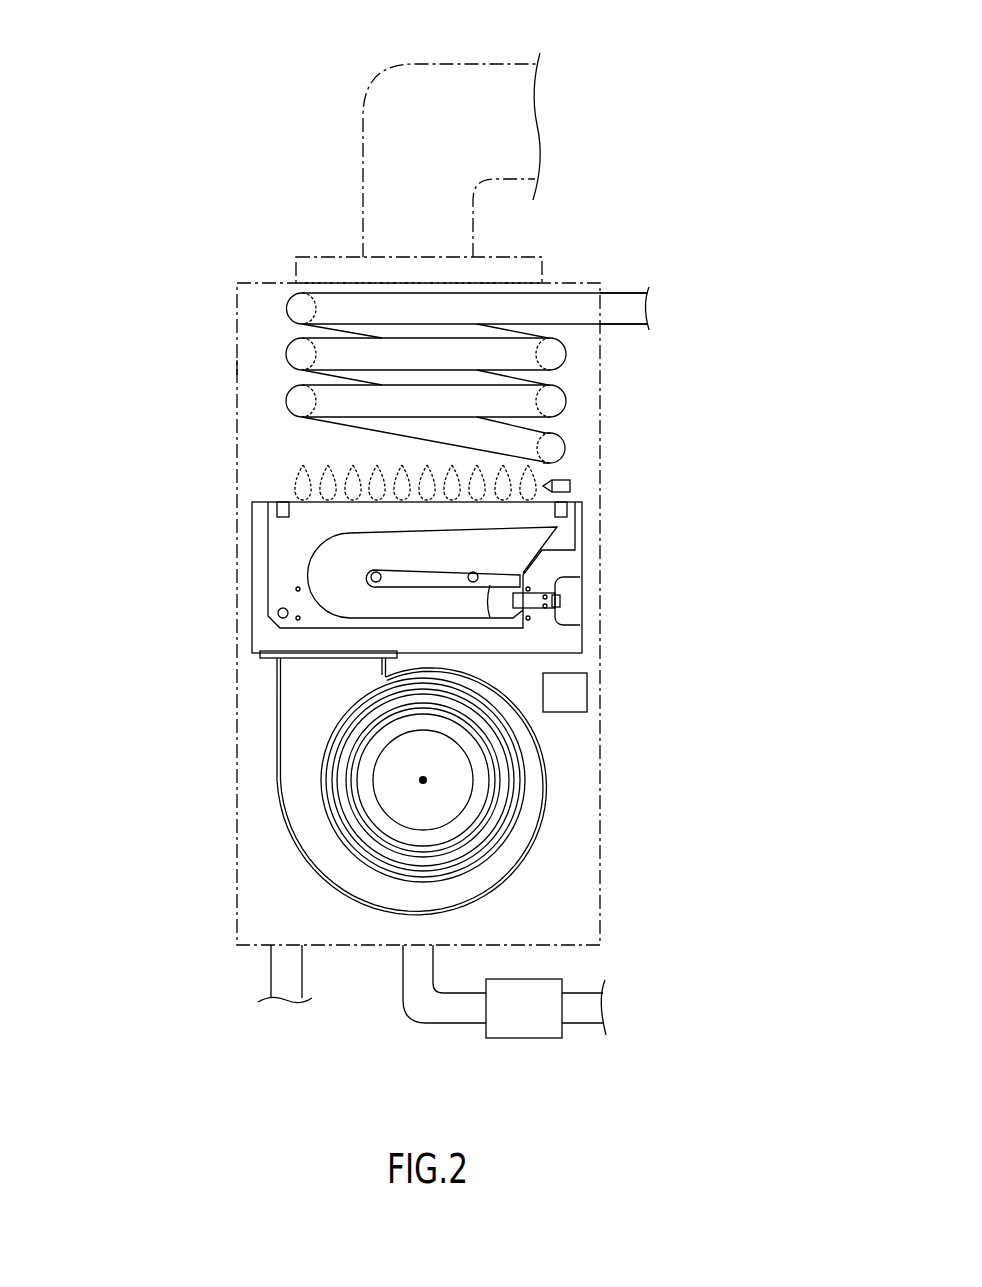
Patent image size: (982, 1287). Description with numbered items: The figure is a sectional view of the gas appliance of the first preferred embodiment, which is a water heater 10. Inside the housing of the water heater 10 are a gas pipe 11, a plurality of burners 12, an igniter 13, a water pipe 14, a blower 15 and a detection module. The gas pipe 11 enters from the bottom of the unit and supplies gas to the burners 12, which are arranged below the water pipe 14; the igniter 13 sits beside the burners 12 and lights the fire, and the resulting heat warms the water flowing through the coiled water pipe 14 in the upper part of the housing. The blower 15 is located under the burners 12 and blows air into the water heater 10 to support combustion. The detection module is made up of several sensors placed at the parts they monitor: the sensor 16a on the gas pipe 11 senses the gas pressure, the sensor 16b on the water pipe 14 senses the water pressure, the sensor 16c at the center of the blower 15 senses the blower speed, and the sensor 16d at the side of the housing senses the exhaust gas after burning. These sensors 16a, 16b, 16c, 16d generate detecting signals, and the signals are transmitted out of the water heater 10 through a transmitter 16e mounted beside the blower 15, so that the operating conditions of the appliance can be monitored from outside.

The water heater 10 is at (236, 199).
The gas pipe 11 is at (415, 1007).
The burners 12 is at (252, 578).
The igniter 13 is at (570, 485).
The water pipe 14 is at (562, 300).
The blower 15 is at (510, 873).
The sensor 16a is at (463, 1037).
The sensor 16b is at (617, 280).
The sensor 16c is at (423, 780).
The sensor 16d is at (260, 367).
The transmitter 16e is at (573, 697).